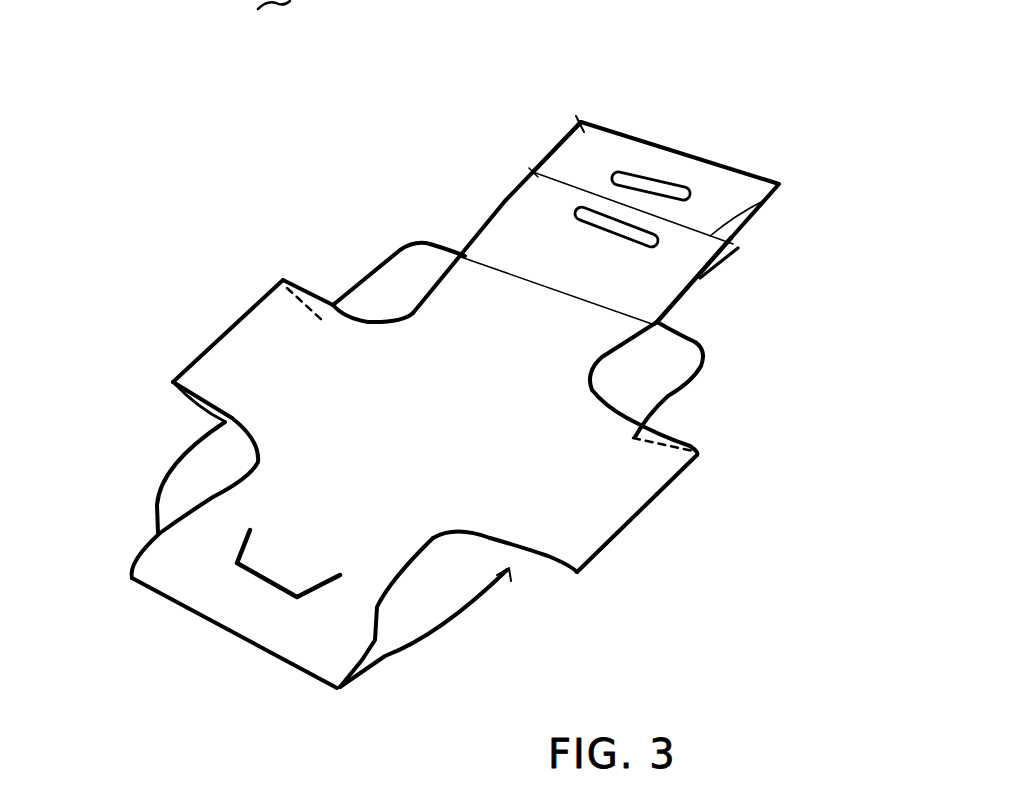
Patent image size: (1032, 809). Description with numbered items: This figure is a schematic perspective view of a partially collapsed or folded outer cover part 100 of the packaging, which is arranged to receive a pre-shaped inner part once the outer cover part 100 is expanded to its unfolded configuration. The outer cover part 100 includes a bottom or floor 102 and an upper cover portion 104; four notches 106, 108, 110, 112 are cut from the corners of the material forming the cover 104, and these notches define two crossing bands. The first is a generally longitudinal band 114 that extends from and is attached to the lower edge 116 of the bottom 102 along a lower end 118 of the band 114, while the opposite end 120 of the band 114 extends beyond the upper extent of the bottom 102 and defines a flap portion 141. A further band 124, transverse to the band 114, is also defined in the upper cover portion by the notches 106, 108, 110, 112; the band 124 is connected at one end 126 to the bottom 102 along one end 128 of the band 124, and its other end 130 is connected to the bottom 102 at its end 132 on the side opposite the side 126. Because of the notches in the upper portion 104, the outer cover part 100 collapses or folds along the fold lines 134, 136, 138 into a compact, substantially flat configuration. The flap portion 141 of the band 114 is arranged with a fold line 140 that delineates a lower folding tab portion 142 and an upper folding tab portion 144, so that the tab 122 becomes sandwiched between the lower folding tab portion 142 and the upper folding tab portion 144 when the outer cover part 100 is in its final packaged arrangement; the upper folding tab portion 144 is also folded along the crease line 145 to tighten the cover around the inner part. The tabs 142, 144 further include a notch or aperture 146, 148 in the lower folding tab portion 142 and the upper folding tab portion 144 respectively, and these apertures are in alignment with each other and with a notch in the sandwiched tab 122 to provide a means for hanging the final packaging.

The outer cover part 100 is at (820, 378).
The bottom 102 is at (636, 393).
The upper cover portion 104 is at (452, 527).
The notch 106 is at (473, 540).
The notch 108 is at (602, 390).
The notch 110 is at (398, 306).
The notch 112 is at (247, 458).
The longitudinal band 114 is at (177, 581).
The lower edge 116 is at (408, 644).
The lower end 118 is at (399, 636).
The opposite end 120 is at (770, 165).
The tab 122 is at (703, 279).
The transverse band 124 is at (605, 510).
The one end of the transverse band 126 is at (607, 563).
The end of the band 128 is at (508, 570).
The end of the transverse band 130 is at (225, 318).
The end of the bottom 132 is at (220, 422).
The fold line 134 is at (210, 624).
The fold line 136 is at (667, 483).
The fold line 138 is at (248, 300).
The fold line 140 is at (762, 205).
The flap portion 141 is at (540, 138).
The lower folding tab portion 142 is at (583, 140).
The upper folding tab portion 144 is at (504, 214).
The crease line 145 is at (487, 264).
The aperture 146 is at (655, 185).
The aperture 148 is at (592, 212).